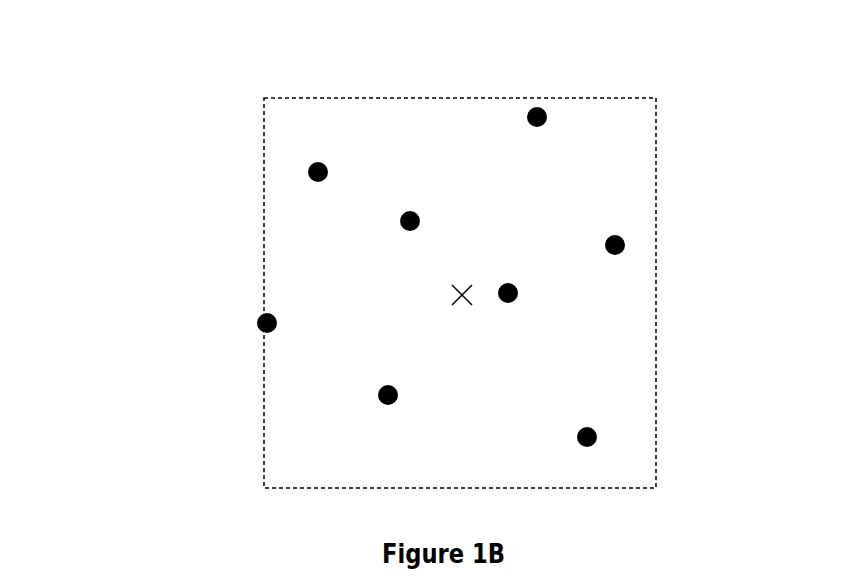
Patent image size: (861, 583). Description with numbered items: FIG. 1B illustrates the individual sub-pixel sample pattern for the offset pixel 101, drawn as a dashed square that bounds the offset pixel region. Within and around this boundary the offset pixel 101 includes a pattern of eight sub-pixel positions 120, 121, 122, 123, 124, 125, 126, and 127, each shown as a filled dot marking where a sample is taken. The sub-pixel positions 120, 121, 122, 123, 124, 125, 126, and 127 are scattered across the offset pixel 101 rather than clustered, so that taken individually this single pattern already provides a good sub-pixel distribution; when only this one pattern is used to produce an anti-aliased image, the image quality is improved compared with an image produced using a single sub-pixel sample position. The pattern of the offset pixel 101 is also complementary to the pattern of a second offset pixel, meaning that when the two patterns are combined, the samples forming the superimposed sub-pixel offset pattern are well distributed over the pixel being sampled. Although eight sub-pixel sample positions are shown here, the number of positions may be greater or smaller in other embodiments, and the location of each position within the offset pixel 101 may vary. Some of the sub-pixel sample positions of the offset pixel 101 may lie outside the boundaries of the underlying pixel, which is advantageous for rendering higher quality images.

The offset pixel 101 is at (264, 130).
The sub-pixel position 120 is at (325, 160).
The sub-pixel position 121 is at (542, 105).
The sub-pixel position 122 is at (621, 233).
The sub-pixel position 123 is at (518, 288).
The sub-pixel position 124 is at (595, 430).
The sub-pixel position 125 is at (400, 213).
The sub-pixel position 126 is at (258, 313).
The sub-pixel position 127 is at (378, 388).